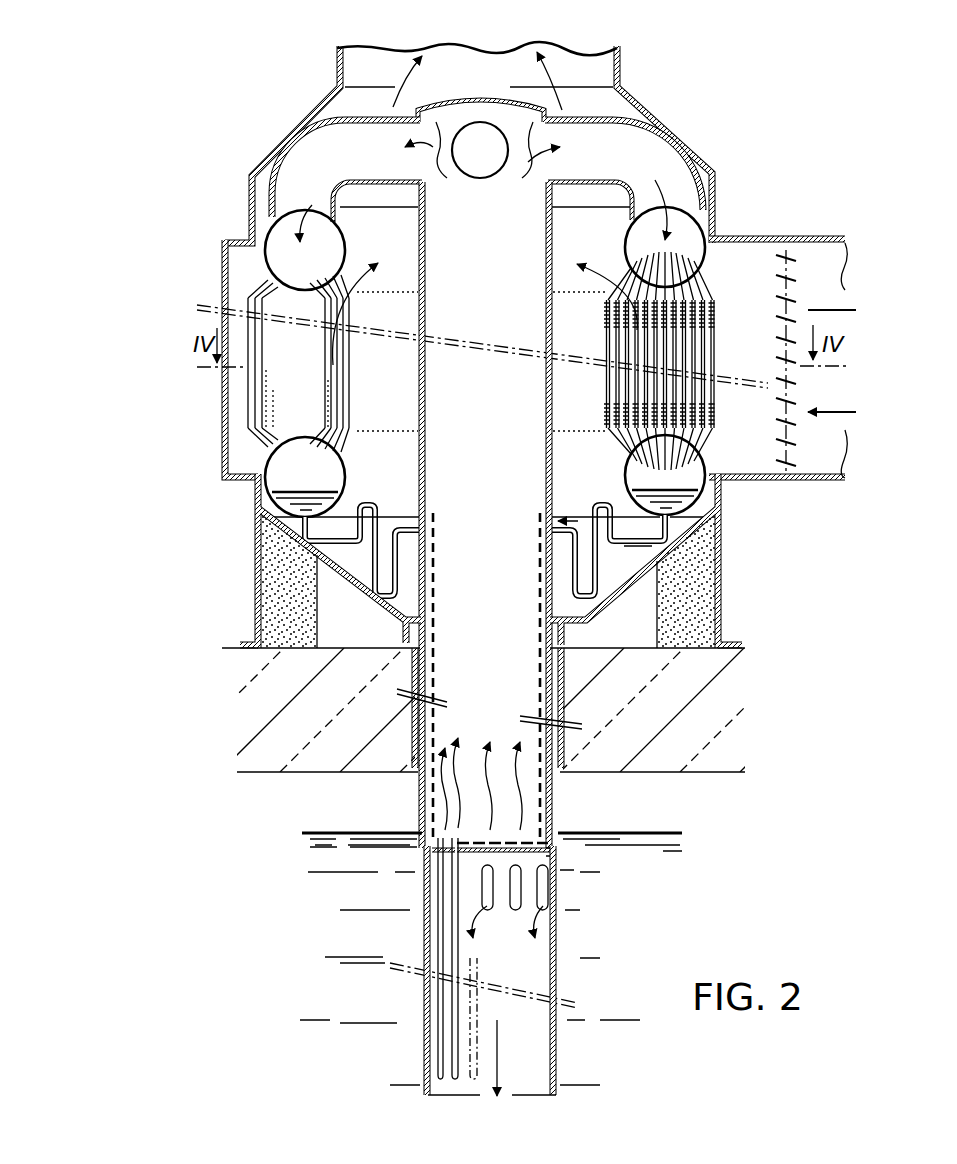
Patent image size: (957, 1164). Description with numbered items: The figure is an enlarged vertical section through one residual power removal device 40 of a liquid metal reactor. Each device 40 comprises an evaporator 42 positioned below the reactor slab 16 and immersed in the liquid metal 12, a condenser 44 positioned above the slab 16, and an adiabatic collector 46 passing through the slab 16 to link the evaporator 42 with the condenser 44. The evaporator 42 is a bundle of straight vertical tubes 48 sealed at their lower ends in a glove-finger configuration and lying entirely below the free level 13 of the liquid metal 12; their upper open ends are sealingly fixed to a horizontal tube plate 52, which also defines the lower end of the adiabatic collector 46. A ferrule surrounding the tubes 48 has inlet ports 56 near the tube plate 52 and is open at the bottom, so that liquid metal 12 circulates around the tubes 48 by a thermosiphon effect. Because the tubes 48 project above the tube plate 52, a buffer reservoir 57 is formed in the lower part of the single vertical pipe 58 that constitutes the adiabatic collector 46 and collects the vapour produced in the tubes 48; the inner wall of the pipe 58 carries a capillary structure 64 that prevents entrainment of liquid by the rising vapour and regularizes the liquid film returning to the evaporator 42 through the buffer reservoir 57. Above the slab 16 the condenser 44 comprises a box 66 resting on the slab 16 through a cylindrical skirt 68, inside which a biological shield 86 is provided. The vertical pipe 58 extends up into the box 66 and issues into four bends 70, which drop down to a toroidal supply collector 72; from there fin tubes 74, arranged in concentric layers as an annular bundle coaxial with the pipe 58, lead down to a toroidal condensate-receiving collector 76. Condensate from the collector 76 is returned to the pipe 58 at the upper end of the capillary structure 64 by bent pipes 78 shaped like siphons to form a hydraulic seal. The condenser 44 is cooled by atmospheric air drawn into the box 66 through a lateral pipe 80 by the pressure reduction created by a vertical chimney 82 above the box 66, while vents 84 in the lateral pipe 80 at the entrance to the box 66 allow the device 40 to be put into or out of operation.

The liquid metal 12 is at (653, 847).
The free level of liquid metal 13 is at (321, 833).
The slab 16 is at (728, 724).
The residual power removal device 40 is at (376, 890).
The evaporator 42 is at (426, 998).
The condenser 44 is at (216, 434).
The adiabatic collector 46 is at (560, 606).
The tubes 48 is at (460, 1056).
The tube plate 52 is at (552, 850).
The inlet ports 56 is at (514, 912).
The buffer reservoir 57 is at (507, 841).
The vertical pipe 58 is at (427, 796).
The capillary structure 64 is at (433, 563).
The box 66 is at (219, 258).
The cylindrical skirt 68 is at (255, 590).
The bends 70 is at (615, 120).
The toroidal supply collector 72 is at (700, 213).
The fin tubes 74 is at (688, 332).
The toroidal condensate-receiving collector 76 is at (708, 496).
The bent pipes 78 is at (365, 503).
The lateral pipe 80 is at (810, 238).
The chimney 82 is at (337, 74).
The vents 84 is at (788, 450).
The biological shield 86 is at (688, 587).